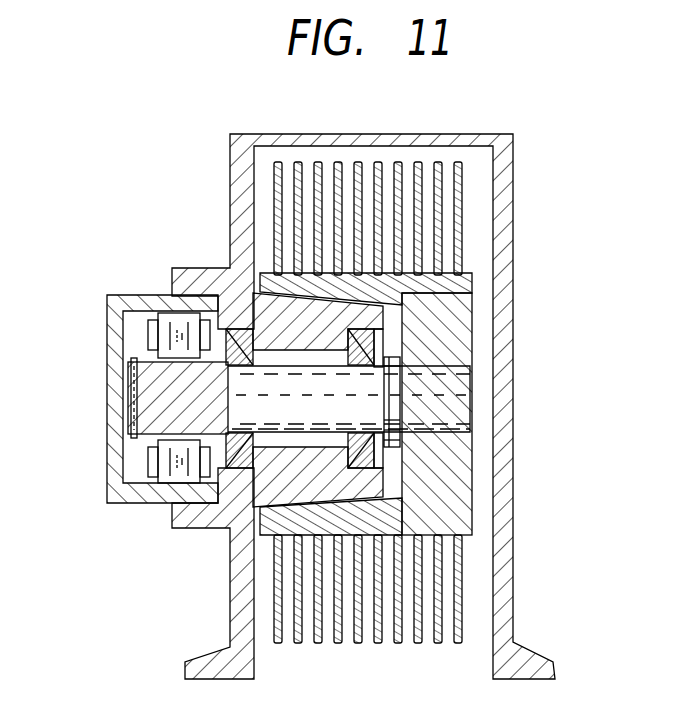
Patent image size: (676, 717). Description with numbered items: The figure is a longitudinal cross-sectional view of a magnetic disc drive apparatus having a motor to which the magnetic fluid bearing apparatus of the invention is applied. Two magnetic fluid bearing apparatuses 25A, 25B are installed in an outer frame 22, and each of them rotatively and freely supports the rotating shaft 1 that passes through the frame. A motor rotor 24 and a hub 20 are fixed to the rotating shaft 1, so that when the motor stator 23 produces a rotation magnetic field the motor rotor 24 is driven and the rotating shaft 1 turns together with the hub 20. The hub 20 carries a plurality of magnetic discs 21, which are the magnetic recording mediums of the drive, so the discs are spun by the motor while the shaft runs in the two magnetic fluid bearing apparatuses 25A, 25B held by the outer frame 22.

The rotating shaft 1 is at (453, 390).
The hub 20 is at (457, 302).
The magnetic discs 21 is at (273, 190).
The outer frame 22 is at (238, 230).
The motor stator 23 is at (128, 298).
The motor rotor 24 is at (112, 362).
The magnetic fluid bearing apparatus 25A is at (228, 476).
The magnetic fluid bearing apparatus 25B is at (395, 467).